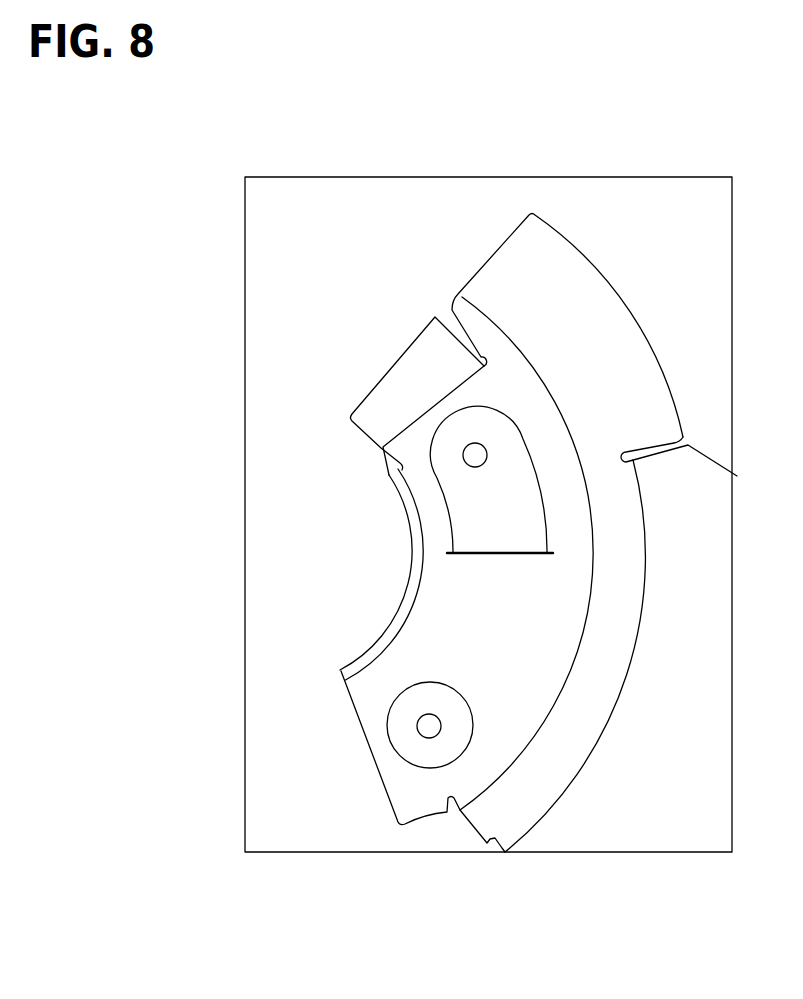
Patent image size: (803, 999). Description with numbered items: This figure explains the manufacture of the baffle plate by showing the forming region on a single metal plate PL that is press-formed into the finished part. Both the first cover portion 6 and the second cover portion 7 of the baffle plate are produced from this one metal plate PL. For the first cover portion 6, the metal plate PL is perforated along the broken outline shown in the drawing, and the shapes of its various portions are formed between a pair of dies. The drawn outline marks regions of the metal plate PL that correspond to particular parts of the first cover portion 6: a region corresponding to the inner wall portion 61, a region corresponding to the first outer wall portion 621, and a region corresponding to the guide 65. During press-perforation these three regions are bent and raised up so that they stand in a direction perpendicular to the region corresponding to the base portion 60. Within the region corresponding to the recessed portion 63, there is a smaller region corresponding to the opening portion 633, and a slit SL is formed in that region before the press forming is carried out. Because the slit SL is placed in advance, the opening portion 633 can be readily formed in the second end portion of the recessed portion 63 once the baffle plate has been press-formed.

The metal plate PL is at (283, 191).
The first outer wall portion 621 is at (601, 304).
The second cover portion 7 is at (620, 853).
The first cover portion 6 is at (415, 622).
The guide 65 is at (392, 382).
The inner wall portion 61 is at (410, 588).
The recessed portion 63 is at (441, 512).
The opening portion 633 is at (500, 548).
The slit SL is at (495, 557).
The base portion 60 is at (376, 822).